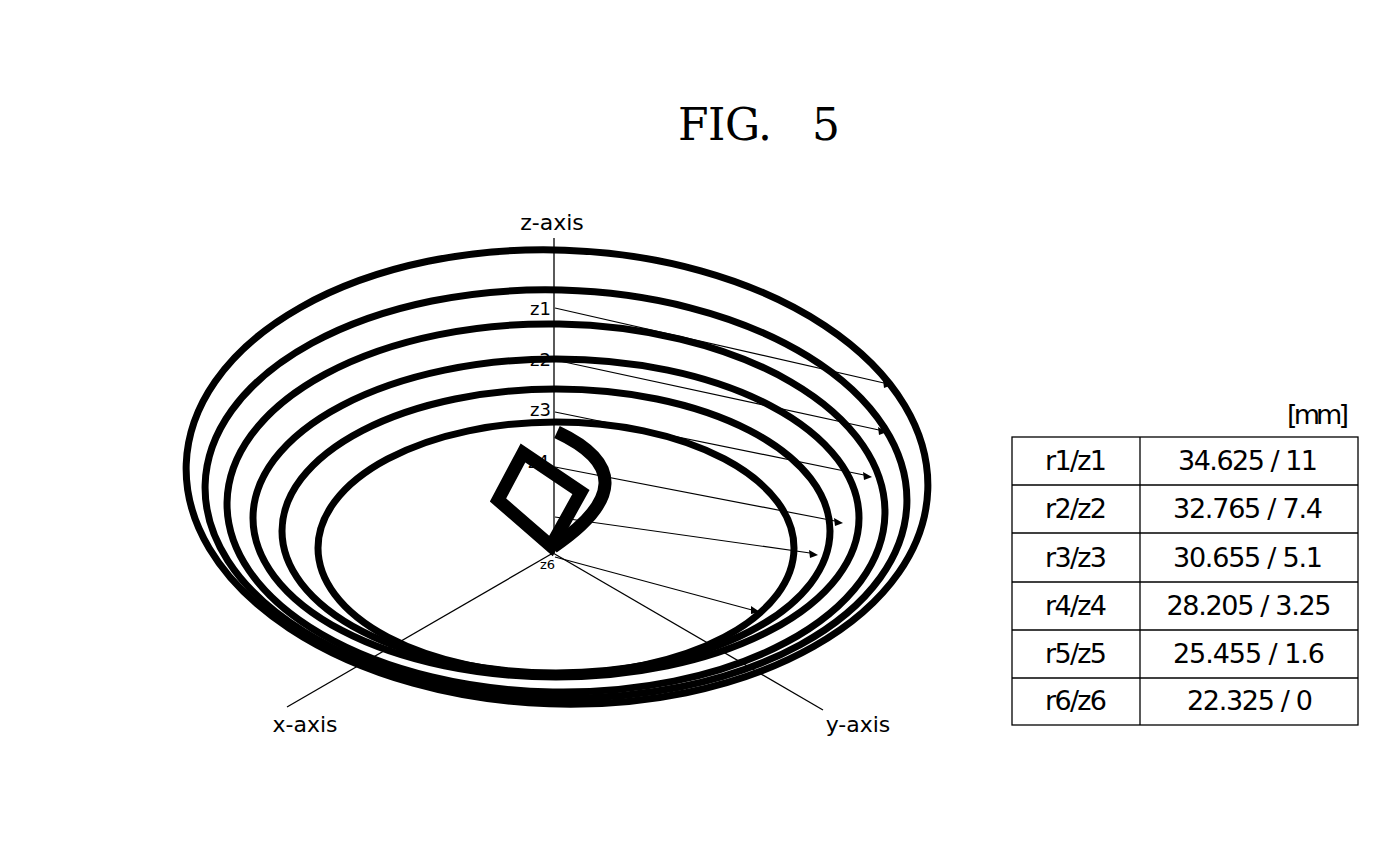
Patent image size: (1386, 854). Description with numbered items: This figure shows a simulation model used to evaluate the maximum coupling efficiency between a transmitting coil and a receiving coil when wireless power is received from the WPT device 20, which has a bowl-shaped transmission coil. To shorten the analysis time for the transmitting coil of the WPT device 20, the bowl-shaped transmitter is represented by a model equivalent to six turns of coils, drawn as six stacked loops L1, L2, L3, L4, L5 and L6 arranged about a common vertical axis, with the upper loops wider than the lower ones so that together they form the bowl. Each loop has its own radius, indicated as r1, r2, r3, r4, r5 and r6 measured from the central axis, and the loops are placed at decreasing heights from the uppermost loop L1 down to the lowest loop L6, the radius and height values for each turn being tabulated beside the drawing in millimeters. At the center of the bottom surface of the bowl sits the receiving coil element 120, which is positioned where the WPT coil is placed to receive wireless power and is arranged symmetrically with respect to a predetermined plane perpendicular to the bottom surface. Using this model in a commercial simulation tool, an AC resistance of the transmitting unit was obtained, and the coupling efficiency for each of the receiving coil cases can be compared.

The WPT device 20 is at (556, 459).
The sensor module 120 is at (515, 515).
The first coil turn L1 is at (556, 477).
The second coil turn L2 is at (556, 494).
The third coil turn L3 is at (556, 505).
The fourth coil turn L4 is at (556, 516).
The fifth coil turn L5 is at (556, 531).
The sixth coil turn L6 is at (556, 548).
The radius of first turn r1 is at (723, 344).
The radius of second turn r2 is at (721, 394).
The radius of third turn r3 is at (713, 439).
The radius of fourth turn r4 is at (699, 491).
The radius of fifth turn r5 is at (686, 534).
The radius of sixth turn r6 is at (657, 585).